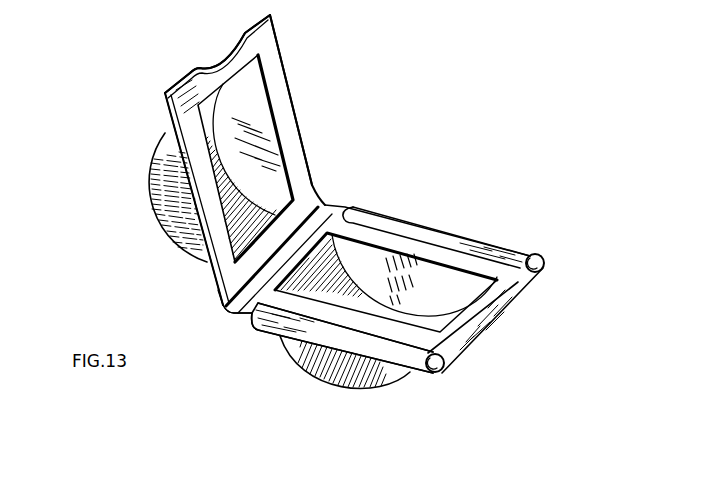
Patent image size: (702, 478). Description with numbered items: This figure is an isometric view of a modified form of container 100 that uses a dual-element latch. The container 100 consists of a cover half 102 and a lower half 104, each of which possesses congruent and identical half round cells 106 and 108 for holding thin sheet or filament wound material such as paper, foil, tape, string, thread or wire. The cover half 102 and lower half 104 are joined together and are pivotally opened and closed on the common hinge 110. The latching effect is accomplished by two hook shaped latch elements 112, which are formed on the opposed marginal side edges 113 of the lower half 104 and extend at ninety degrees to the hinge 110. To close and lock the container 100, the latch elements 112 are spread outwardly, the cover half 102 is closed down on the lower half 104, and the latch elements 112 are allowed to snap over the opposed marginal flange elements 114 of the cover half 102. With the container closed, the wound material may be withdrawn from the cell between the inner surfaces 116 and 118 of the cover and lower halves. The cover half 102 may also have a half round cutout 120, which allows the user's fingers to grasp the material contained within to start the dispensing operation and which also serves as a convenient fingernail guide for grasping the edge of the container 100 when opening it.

The container 100 is at (282, 333).
The cover half 102 is at (297, 133).
The lower half 104 is at (543, 264).
The half round cell 106 is at (167, 207).
The half round cell 108 is at (320, 370).
The common hinge 110 is at (217, 301).
The hook shaped latch elements 112 is at (400, 228).
The opposed marginal side edges 113 is at (531, 256).
The opposed marginal flange elements 114 is at (275, 62).
The inner surface 116 is at (187, 118).
The inner surface 118 is at (497, 313).
The half round cutout 120 is at (232, 62).